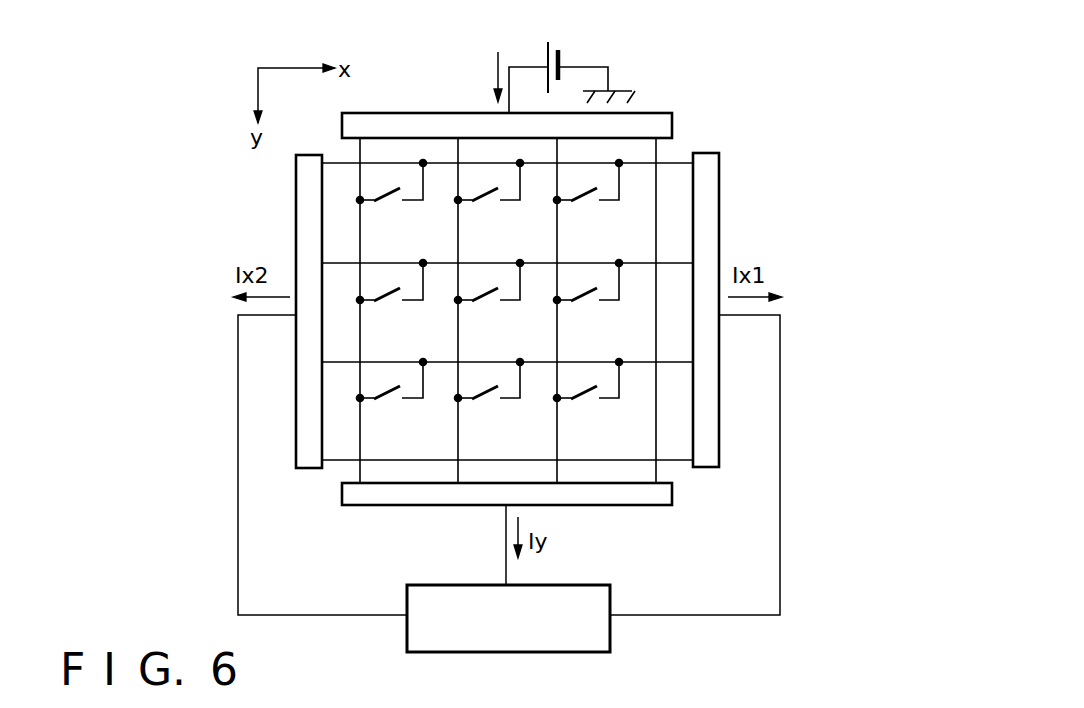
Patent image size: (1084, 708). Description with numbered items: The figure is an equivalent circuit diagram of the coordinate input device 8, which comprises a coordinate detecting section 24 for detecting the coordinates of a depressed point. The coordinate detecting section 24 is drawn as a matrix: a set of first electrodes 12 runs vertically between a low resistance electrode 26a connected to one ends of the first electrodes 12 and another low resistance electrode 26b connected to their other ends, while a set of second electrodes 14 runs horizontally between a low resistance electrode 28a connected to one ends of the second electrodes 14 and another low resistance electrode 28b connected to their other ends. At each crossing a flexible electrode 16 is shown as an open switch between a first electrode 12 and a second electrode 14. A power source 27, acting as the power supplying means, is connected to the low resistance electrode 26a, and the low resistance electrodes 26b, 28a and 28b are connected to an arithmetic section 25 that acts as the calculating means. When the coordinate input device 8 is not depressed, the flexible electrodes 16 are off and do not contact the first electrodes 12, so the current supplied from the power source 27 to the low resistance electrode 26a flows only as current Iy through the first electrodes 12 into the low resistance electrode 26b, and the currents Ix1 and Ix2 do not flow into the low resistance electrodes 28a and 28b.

The coordinate input device 8 is at (760, 148).
The first electrodes 12 is at (658, 463).
The second electrodes 14 is at (677, 162).
The flexible electrodes 16 is at (480, 303).
The coordinate detecting section 24 is at (407, 529).
The arithmetic section 25 is at (612, 638).
The low resistance electrode 26a is at (656, 113).
The low resistance electrode 26b is at (625, 498).
The power source 27 is at (553, 42).
The low resistance electrode 28a is at (712, 202).
The low resistance electrode 28b is at (305, 199).